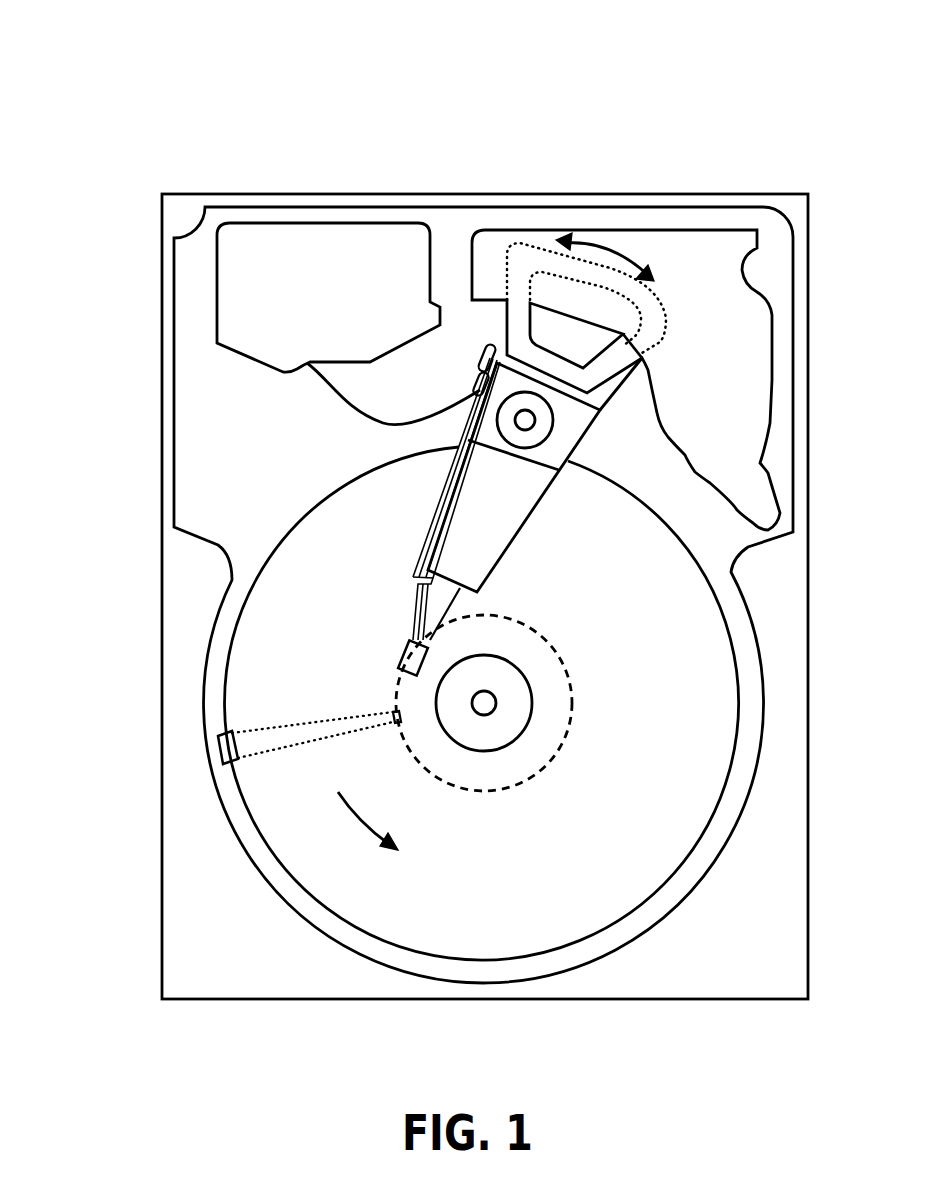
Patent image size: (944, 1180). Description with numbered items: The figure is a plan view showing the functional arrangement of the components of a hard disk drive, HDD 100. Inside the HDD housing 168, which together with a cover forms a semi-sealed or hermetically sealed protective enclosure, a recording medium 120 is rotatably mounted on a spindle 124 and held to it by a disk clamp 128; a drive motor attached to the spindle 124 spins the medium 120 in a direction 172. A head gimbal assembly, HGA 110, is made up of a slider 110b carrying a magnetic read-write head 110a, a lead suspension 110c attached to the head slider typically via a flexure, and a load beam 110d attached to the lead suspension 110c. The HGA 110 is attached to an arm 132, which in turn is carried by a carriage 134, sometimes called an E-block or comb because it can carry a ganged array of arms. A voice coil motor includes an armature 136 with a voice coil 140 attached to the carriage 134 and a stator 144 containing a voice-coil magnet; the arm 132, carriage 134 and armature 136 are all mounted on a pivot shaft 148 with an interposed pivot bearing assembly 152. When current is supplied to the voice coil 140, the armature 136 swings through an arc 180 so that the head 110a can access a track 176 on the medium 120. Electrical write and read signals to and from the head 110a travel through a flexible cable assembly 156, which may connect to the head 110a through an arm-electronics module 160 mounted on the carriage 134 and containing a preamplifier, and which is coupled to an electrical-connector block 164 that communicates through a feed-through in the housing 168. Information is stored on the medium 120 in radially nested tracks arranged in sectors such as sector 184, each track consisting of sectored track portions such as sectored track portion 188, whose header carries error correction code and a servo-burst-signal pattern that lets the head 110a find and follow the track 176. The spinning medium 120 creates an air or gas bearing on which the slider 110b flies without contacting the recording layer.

The hard disk drive 100 is at (92, 75).
The head gimbal assembly 110 is at (90, 505).
The magnetic read-write head 110a is at (405, 666).
The slider 110b is at (417, 635).
The lead suspension 110c is at (417, 605).
The load beam 110d is at (410, 574).
The recording medium 120 is at (668, 655).
The spindle 124 is at (492, 703).
The disk clamp 128 is at (510, 718).
The arm 132 is at (477, 537).
The carriage 134 is at (543, 455).
The armature 136 is at (503, 350).
The voice coil 140 is at (520, 313).
The stator 144 is at (737, 323).
The pivot shaft 148 is at (536, 420).
The pivot bearing assembly 152 is at (540, 436).
The flexible cable assembly 156 is at (340, 397).
The arm-electronics module 160 is at (475, 389).
The electrical-connector block 164 is at (242, 297).
The HDD housing 168 is at (788, 207).
The direction 172 is at (373, 826).
The track 176 is at (562, 667).
The arc 180 is at (605, 248).
The sector 184 is at (220, 750).
The sectored track portion 188 is at (390, 712).